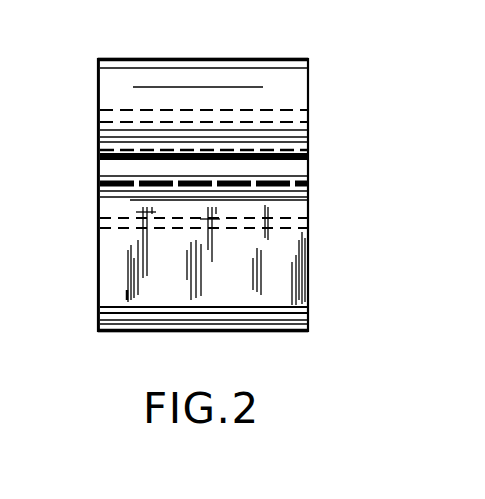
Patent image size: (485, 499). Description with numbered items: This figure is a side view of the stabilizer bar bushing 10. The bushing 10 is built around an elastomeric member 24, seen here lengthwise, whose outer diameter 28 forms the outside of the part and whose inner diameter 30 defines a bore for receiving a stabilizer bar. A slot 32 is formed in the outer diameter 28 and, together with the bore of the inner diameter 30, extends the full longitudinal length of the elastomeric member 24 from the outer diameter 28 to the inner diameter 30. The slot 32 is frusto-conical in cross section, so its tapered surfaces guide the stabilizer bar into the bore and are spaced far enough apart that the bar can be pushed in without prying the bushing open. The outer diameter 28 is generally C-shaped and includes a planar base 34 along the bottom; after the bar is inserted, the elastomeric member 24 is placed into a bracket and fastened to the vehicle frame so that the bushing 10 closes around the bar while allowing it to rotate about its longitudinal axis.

The stabilizer bar bushing 10 is at (330, 165).
The elastomeric member 24 is at (302, 272).
The outer diameter 28 is at (201, 58).
The inner diameter 30 is at (108, 217).
The slot 32 is at (301, 161).
The planar base 34 is at (272, 333).